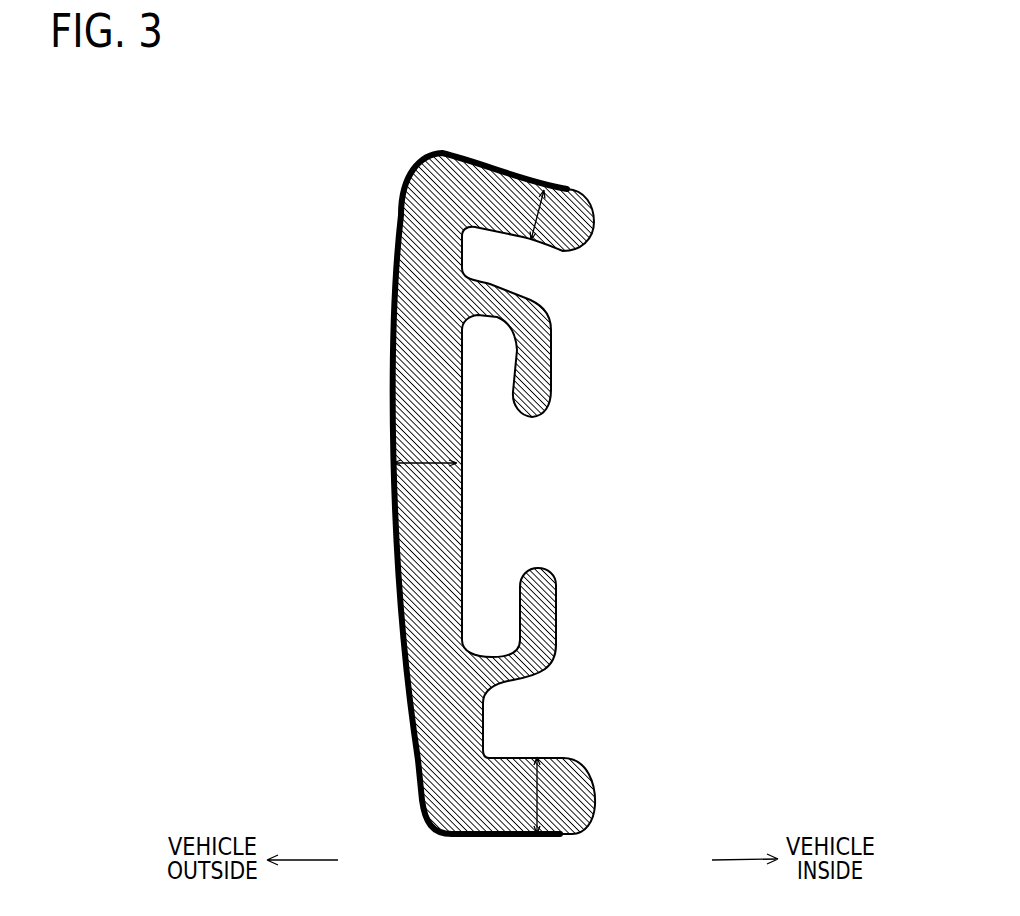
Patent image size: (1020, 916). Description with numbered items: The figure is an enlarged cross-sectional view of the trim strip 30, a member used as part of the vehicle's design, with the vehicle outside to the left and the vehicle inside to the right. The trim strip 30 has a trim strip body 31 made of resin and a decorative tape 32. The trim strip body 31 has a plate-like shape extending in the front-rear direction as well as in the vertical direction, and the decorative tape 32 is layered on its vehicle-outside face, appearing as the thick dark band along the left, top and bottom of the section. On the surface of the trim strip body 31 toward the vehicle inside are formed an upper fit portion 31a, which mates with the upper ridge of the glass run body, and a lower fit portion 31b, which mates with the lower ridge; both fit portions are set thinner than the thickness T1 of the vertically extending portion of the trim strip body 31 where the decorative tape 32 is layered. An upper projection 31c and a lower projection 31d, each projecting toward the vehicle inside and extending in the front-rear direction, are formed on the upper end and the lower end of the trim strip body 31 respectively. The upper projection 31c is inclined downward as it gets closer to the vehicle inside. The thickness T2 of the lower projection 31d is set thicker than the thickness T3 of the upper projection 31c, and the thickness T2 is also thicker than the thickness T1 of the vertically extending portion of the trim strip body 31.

The trim strip 30 is at (485, 493).
The trim strip body 31 is at (390, 576).
The upper fit portion 31a is at (553, 382).
The lower fit portion 31b is at (556, 593).
The upper projection 31c is at (597, 222).
The lower projection 31d is at (596, 798).
The decorative tape 32 is at (388, 528).
The thickness of trim strip body portion T1 is at (425, 446).
The thickness of lower projection T2 is at (519, 795).
The thickness of upper projection T3 is at (520, 215).